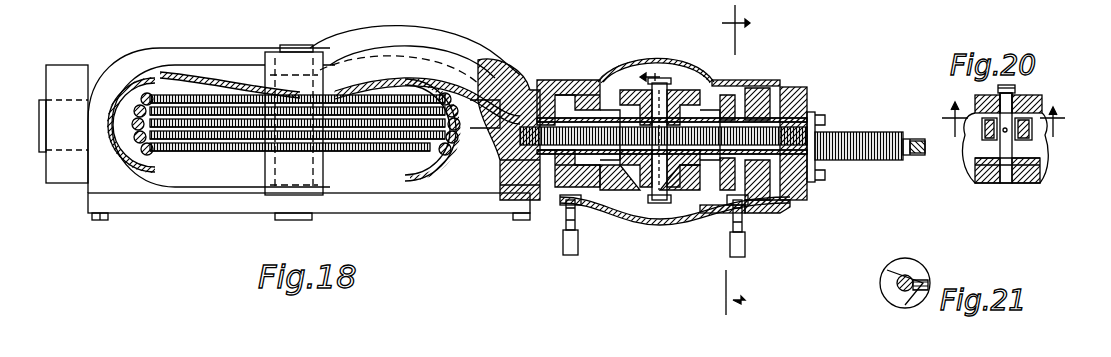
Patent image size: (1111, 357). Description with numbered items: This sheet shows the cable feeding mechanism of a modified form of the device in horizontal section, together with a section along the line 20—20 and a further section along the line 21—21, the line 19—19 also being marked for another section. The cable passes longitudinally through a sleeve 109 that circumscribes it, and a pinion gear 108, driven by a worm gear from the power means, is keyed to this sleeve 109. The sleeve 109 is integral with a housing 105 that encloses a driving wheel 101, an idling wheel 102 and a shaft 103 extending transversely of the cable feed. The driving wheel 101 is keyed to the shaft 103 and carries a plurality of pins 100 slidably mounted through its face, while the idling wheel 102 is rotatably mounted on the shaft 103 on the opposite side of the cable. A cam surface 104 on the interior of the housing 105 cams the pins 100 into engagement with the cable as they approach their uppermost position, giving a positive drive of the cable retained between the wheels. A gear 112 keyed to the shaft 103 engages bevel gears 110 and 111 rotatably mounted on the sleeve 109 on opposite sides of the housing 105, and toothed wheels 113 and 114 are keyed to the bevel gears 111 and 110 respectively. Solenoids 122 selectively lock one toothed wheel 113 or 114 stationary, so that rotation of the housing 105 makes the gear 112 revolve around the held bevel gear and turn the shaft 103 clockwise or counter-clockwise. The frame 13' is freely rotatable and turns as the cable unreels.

In FIG. 18, the collar 13' is at (358, 158).
In FIG. 18, the section line 19 is at (725, 160).
In FIG. 18, the section line 20 is at (659, 76).
In FIG. 20, the section line 21 is at (1004, 124).
In FIG. 18, the pins 100 is at (700, 97).
In FIG. 20, the driving wheel 101 is at (1030, 130).
In FIG. 18, the idling wheel 102 is at (688, 200).
In FIG. 20, the idling wheel 102 is at (1035, 165).
In FIG. 18, the shaft 103 is at (648, 192).
In FIG. 20, the cam surface 104 is at (1040, 100).
In FIG. 21, the cam surface 104 is at (925, 272).
In FIG. 20, the housing 105 is at (1015, 92).
In FIG. 18, the pinion gear 108 is at (780, 213).
In FIG. 18, the sleeve 109 is at (797, 117).
In FIG. 18, the bevel gear 110 is at (713, 113).
In FIG. 18, the bevel gear 111 is at (587, 80).
In FIG. 18, the gear 112 is at (610, 192).
In FIG. 18, the toothed wheel 113 is at (558, 198).
In FIG. 18, the toothed wheel 114 is at (752, 220).
In FIG. 18, the solenoid 122 is at (568, 257).